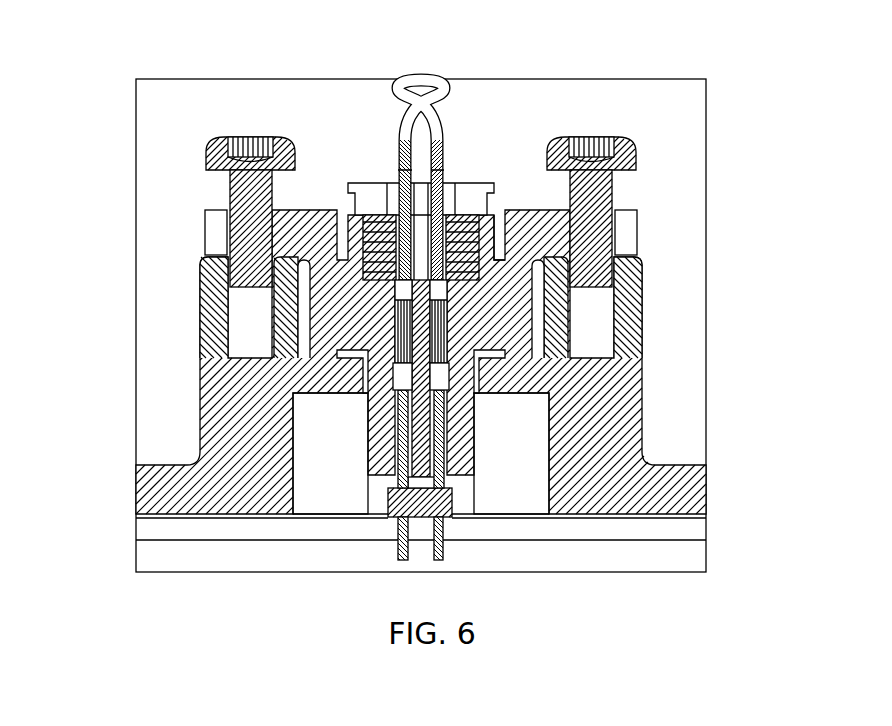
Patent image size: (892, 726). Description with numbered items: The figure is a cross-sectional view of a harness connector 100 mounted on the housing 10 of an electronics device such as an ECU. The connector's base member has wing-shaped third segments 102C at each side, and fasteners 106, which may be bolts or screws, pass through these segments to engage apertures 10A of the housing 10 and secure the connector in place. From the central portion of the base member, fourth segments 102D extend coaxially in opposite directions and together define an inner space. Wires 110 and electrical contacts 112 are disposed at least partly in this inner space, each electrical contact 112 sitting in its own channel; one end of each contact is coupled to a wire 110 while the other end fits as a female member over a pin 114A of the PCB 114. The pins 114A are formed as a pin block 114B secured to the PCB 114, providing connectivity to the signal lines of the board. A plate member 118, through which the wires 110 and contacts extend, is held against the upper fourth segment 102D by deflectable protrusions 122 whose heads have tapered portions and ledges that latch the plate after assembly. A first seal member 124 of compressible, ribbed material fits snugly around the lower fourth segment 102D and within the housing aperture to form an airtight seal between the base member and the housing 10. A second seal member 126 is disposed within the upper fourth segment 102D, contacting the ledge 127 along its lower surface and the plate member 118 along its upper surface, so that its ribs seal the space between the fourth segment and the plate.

The harness connector 100 is at (575, 57).
The housing 10 is at (220, 458).
The apertures of housing 10A is at (243, 338).
The third segments 102C is at (212, 230).
The fourth segments 102D is at (380, 455).
The fasteners 106 is at (230, 136).
The wires 110 is at (438, 76).
The electrical contacts 112 is at (398, 330).
The PCB 114 is at (140, 530).
The pins 114A is at (397, 482).
The pin block 114B is at (395, 503).
The plate member 118 is at (378, 195).
The deflectable protrusions 122 is at (355, 185).
The first seal member 124 is at (475, 356).
The second seal member 126 is at (455, 220).
The ledge 127 is at (492, 243).